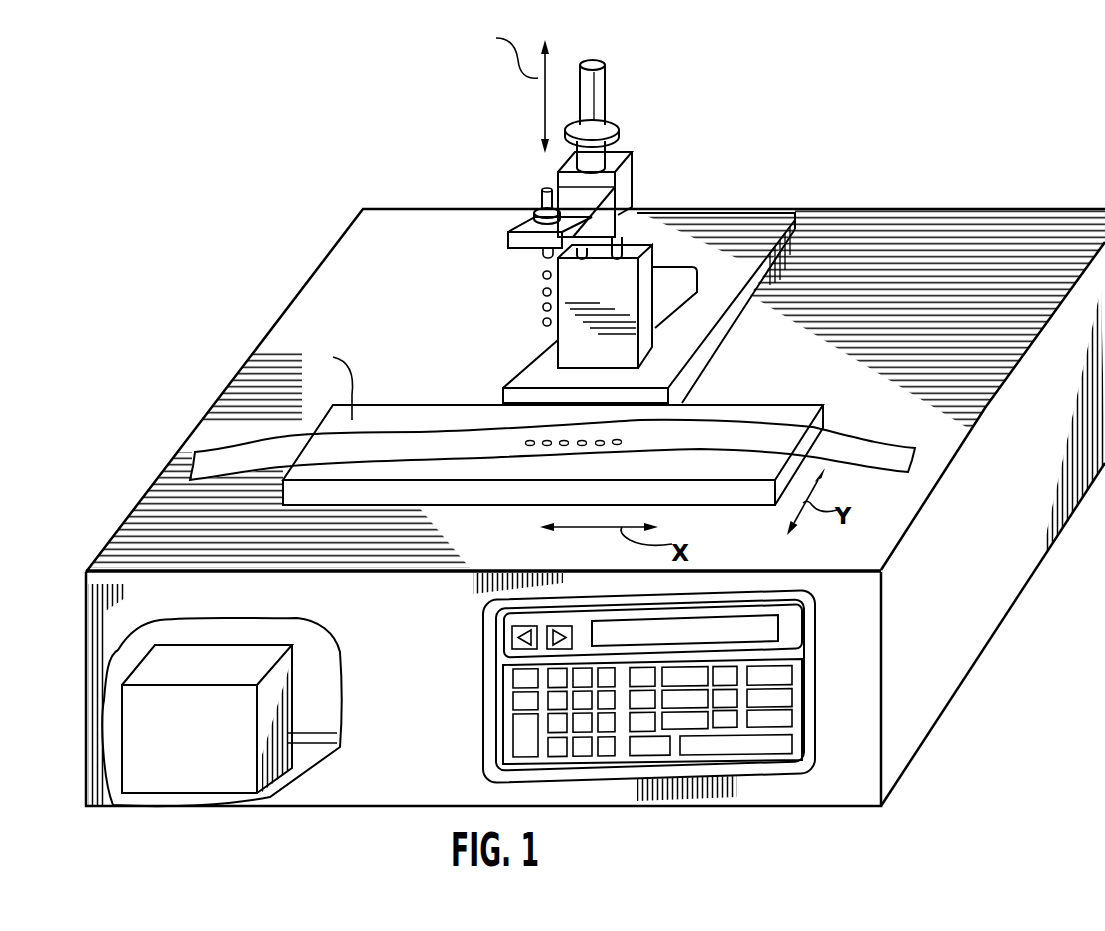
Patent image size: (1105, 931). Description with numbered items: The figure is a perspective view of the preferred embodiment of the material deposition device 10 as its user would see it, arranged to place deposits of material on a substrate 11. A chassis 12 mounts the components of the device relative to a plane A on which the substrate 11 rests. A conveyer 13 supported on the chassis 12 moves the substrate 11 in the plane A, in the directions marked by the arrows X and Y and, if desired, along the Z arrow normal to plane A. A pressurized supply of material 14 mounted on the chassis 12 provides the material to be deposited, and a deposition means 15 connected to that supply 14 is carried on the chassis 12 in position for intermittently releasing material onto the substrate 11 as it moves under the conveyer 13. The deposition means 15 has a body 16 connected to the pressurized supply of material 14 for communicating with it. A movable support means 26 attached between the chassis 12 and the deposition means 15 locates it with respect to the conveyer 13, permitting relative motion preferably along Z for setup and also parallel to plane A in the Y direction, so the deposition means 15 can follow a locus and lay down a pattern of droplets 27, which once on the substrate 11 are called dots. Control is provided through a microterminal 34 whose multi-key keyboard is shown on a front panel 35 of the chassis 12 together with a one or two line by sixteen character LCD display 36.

The material deposition device 10 is at (921, 158).
The substrate 11 is at (276, 449).
The chassis 12 is at (1023, 589).
The conveyer 13 is at (498, 500).
The pressurized supply of material 14 is at (166, 744).
The deposition means 15 is at (485, 128).
The body 16 is at (535, 213).
The movable support means 26 is at (641, 217).
The droplets 27 is at (545, 307).
The microterminal 34 is at (471, 710).
The front panel 35 is at (818, 585).
The LCD display 36 is at (690, 636).